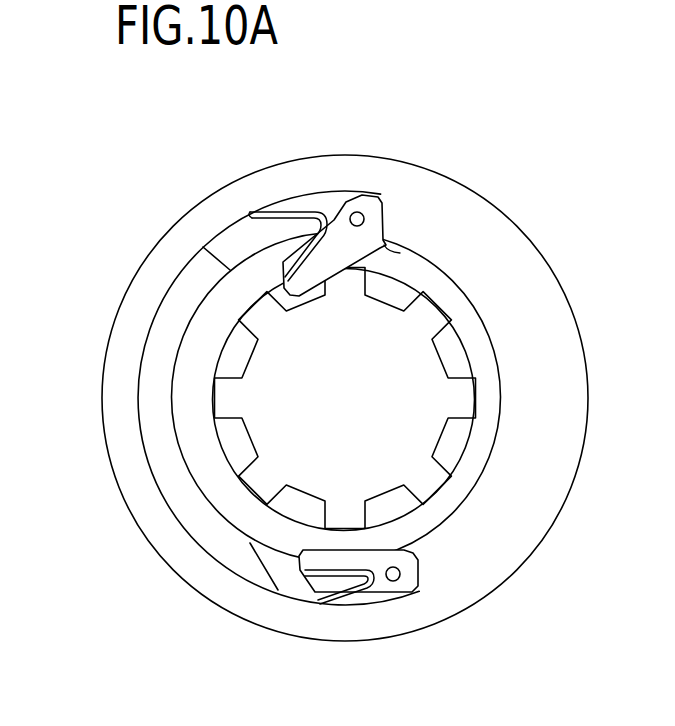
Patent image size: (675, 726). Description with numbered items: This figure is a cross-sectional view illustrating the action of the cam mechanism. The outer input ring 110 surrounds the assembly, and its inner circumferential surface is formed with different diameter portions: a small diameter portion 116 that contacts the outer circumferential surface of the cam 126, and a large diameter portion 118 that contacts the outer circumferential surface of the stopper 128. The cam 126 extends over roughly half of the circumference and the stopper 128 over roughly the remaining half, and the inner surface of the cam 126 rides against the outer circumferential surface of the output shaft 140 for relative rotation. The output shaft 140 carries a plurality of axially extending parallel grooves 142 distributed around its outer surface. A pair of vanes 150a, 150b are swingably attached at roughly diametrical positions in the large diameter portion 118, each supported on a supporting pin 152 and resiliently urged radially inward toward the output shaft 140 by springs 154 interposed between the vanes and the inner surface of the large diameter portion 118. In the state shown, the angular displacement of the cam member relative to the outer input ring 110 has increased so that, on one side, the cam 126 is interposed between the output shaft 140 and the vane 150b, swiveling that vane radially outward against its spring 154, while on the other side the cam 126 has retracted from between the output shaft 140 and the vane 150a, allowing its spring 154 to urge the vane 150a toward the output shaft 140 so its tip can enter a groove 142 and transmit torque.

The outer input ring 110 is at (481, 218).
The small diameter portion 116 is at (498, 372).
The large diameter portion 118 is at (178, 285).
The cam 126 is at (461, 313).
The stopper 128 is at (157, 337).
The output shaft 140 is at (252, 430).
The grooves 142 is at (250, 543).
The vane 150a is at (287, 291).
The vane 150b is at (298, 552).
The supporting pin 152 is at (360, 219).
The springs 154 is at (307, 220).